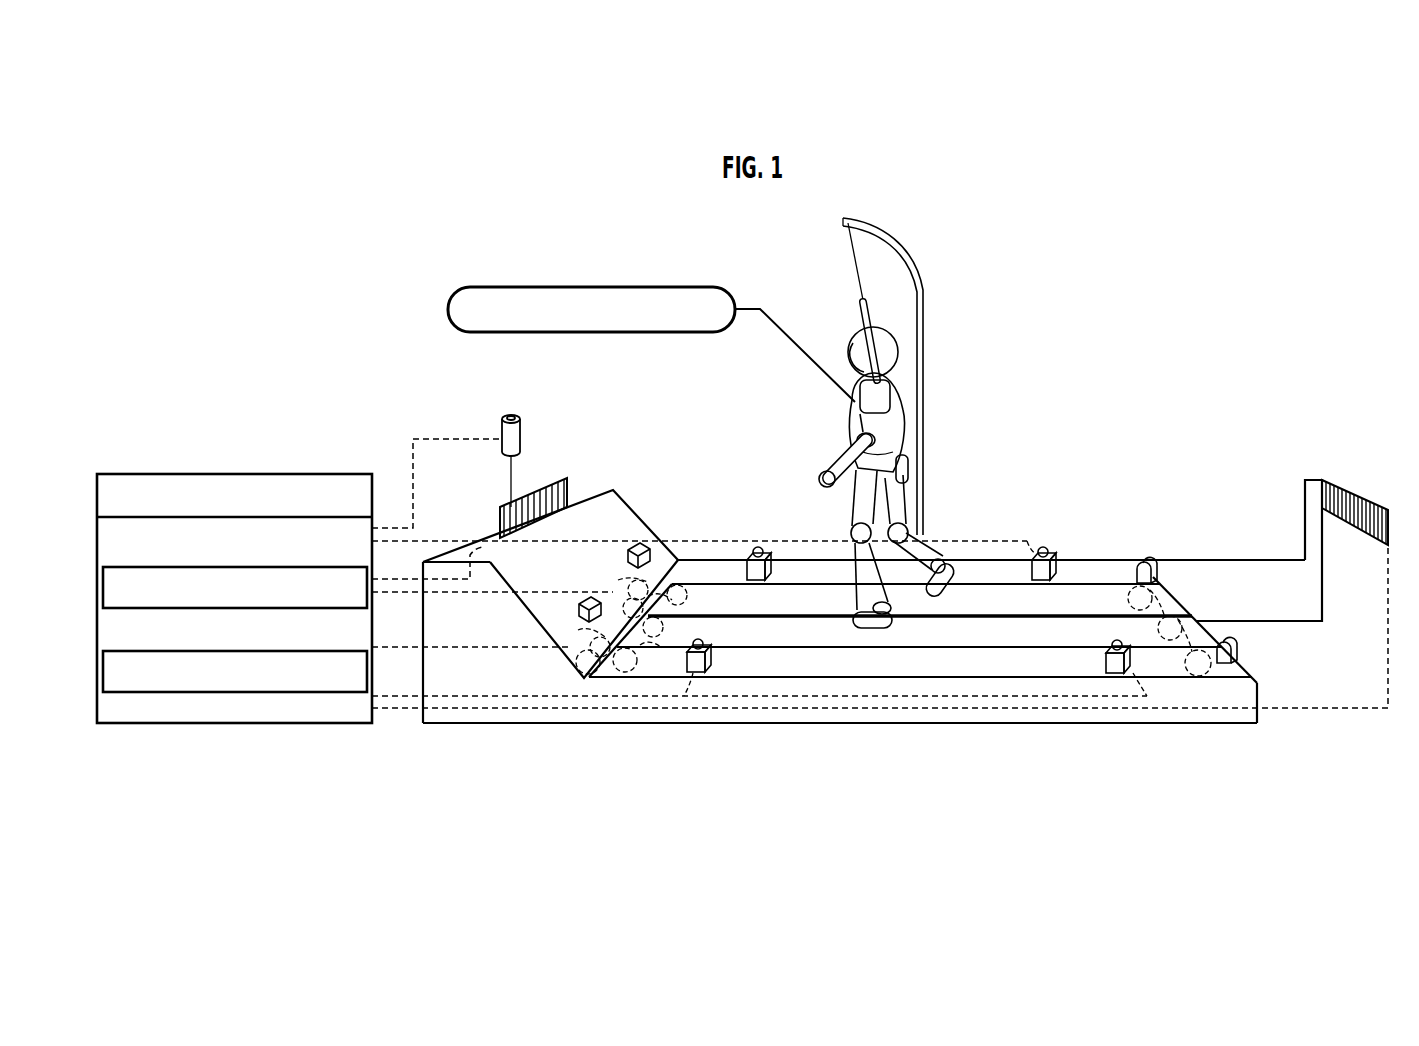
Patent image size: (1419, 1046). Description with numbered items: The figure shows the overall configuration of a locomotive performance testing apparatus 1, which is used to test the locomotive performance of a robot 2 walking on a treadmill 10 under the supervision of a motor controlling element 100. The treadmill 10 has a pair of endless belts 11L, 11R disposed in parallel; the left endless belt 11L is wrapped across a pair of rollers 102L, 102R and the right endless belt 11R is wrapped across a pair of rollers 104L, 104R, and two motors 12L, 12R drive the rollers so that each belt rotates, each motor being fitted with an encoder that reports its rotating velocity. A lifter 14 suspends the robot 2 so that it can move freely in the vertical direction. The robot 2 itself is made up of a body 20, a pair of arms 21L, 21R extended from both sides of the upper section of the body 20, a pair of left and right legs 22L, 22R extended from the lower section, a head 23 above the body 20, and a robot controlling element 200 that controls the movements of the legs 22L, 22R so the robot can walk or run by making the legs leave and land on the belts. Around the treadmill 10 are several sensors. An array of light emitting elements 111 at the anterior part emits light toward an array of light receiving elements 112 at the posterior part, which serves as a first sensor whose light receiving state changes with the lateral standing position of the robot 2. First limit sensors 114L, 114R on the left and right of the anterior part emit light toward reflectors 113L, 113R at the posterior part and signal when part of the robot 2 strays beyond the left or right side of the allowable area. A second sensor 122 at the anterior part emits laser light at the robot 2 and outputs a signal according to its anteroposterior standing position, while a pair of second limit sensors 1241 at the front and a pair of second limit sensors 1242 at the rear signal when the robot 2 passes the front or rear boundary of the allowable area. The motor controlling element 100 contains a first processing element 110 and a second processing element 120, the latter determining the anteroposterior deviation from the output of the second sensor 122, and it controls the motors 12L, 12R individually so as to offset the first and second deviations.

The locomotive performance testing apparatus 1 is at (408, 283).
The robot 2 is at (900, 377).
The treadmill 10 is at (1032, 462).
The right endless belt 11R is at (1085, 603).
The left endless belt 11L is at (1098, 633).
The right motor 12R is at (632, 593).
The left motor 12L is at (583, 648).
The lifter 14 is at (925, 257).
The body 20 is at (852, 415).
The left arm 21L is at (850, 462).
The right arm 21R is at (904, 455).
The left leg 22L is at (858, 533).
The right leg 22R is at (902, 533).
The head 23 is at (857, 340).
The motor controlling element 100 is at (292, 474).
The roller 102R is at (660, 603).
The roller 102L is at (645, 633).
The roller 104R is at (1160, 600).
The roller 104L is at (1185, 630).
The first processing element 110 is at (292, 567).
The array of light emitting elements 111 is at (577, 473).
The array of light receiving elements 112 is at (1342, 483).
The right reflector 113R is at (1160, 570).
The left reflector 113L is at (1238, 658).
The right first limit sensor 114R is at (638, 542).
The left first limit sensor 114L is at (577, 597).
The second processing element 120 is at (292, 650).
The second sensor 122 is at (530, 432).
The second limit sensors 1241 is at (745, 543).
The second limit sensors 1242 is at (1053, 548).
The robot controlling element 200 is at (682, 288).